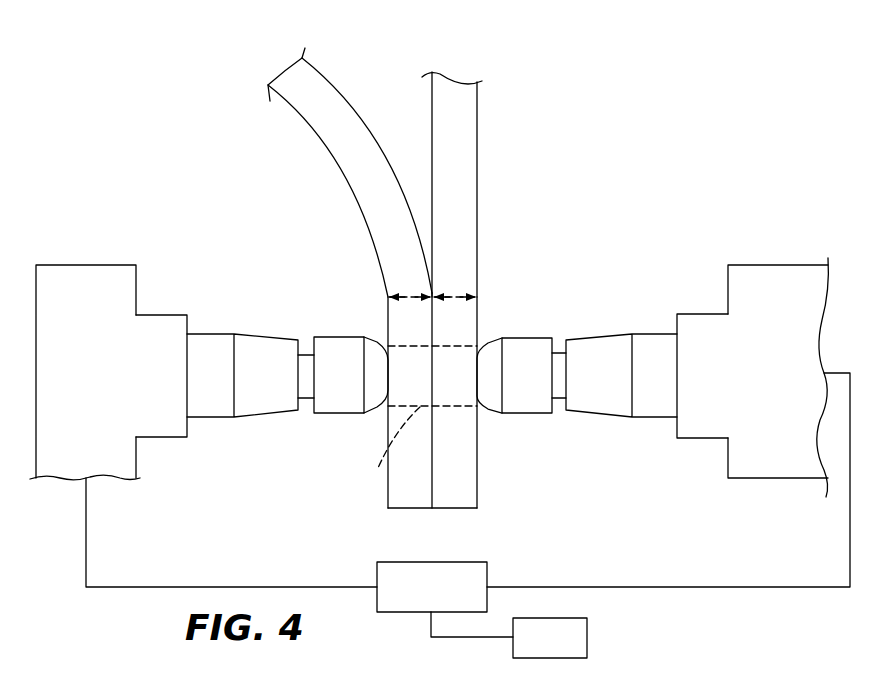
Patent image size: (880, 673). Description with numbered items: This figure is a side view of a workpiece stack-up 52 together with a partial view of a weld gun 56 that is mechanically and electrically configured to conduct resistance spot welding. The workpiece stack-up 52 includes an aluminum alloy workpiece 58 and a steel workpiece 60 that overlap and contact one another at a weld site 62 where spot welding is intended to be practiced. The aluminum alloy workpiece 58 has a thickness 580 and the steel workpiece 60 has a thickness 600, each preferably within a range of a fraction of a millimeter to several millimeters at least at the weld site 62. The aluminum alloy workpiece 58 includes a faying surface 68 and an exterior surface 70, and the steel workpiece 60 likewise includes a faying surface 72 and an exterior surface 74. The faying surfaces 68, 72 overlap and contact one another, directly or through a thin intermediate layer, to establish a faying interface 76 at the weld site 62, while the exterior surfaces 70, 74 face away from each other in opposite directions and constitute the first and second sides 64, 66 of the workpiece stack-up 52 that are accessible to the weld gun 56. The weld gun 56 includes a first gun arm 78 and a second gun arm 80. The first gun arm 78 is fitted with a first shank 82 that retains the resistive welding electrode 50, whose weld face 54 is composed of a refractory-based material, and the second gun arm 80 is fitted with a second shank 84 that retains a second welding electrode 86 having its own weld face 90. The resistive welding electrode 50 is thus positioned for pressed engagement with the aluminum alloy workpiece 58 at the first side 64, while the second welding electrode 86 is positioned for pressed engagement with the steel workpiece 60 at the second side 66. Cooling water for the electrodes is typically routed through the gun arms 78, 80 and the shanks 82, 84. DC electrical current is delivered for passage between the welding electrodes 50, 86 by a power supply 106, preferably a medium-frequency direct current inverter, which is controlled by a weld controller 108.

The resistive welding electrode 50 is at (508, 407).
The workpiece stack-up 52 is at (429, 391).
The weld face 54 is at (478, 368).
The weld gun 56 is at (153, 458).
The aluminum alloy workpiece 58 is at (455, 184).
The steel workpiece 60 is at (341, 169).
The weld site 62 is at (385, 449).
The first side 64 is at (480, 314).
The second side 66 is at (385, 316).
The faying surface 68 is at (430, 122).
The exterior surface 70 is at (478, 177).
The faying surface 72 is at (347, 97).
The exterior surface 74 is at (323, 145).
The faying interface 76 is at (435, 385).
The first gun arm 78 is at (780, 290).
The second gun arm 80 is at (118, 290).
The first shank 82 is at (558, 362).
The second shank 84 is at (305, 365).
The second welding electrode 86 is at (331, 408).
The weld face 90 is at (388, 396).
The power supply 106 is at (432, 587).
The weld controller 108 is at (550, 638).
The thickness 580 is at (453, 294).
The thickness 600 is at (410, 294).